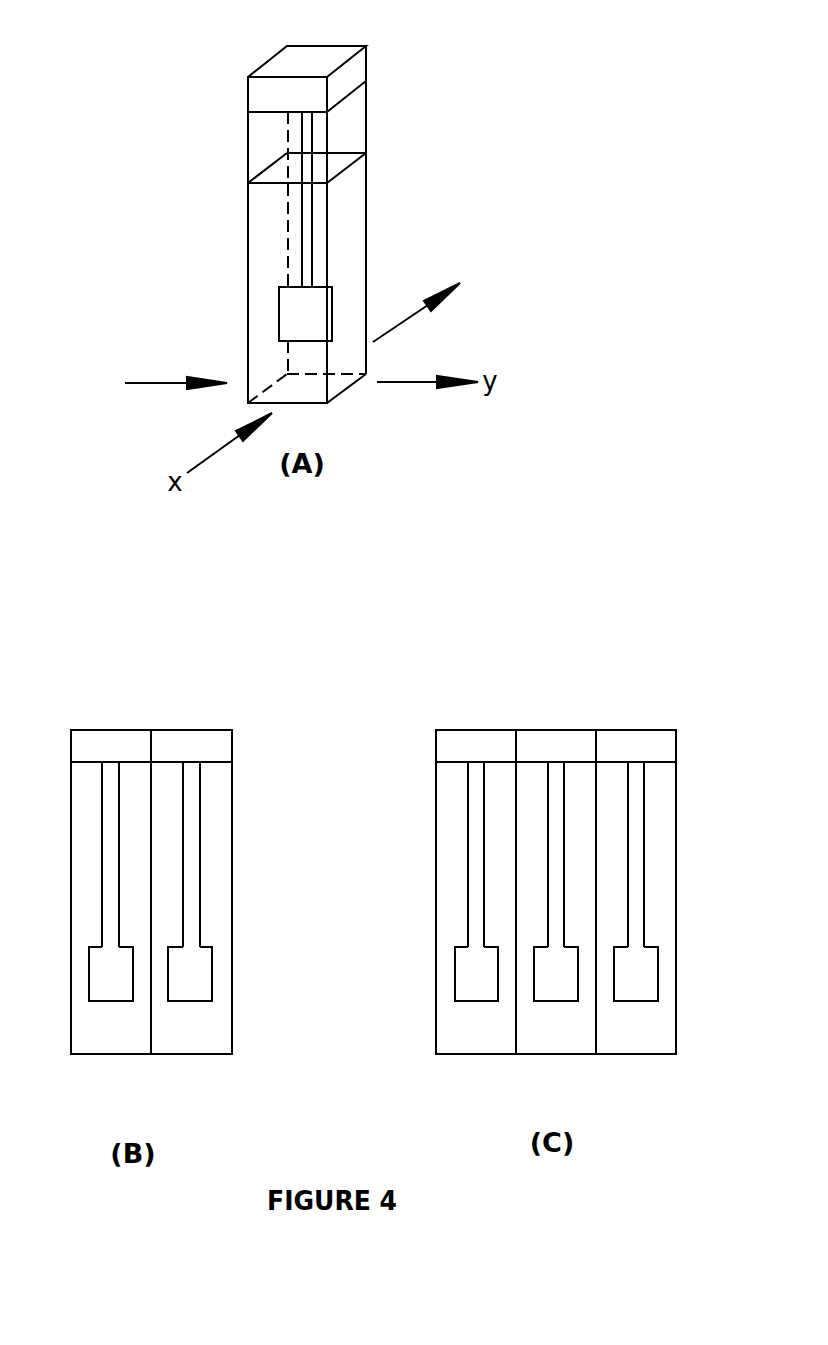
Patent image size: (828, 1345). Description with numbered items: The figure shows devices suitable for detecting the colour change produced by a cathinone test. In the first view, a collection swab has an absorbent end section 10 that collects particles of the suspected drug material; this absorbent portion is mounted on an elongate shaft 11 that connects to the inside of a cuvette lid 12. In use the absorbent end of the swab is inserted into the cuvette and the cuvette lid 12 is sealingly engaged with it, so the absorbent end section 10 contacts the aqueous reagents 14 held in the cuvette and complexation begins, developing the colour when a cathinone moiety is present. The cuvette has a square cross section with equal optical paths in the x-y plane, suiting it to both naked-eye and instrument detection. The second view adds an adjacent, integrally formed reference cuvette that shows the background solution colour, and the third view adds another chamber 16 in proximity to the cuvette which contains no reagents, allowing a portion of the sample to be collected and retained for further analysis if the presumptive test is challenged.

The absorbent end section 10 is at (308, 310).
The elongate shaft 11 is at (307, 233).
The cuvette lid 12 is at (353, 70).
The aqueous reagents 14 is at (343, 211).
The chamber 16 is at (636, 1035).